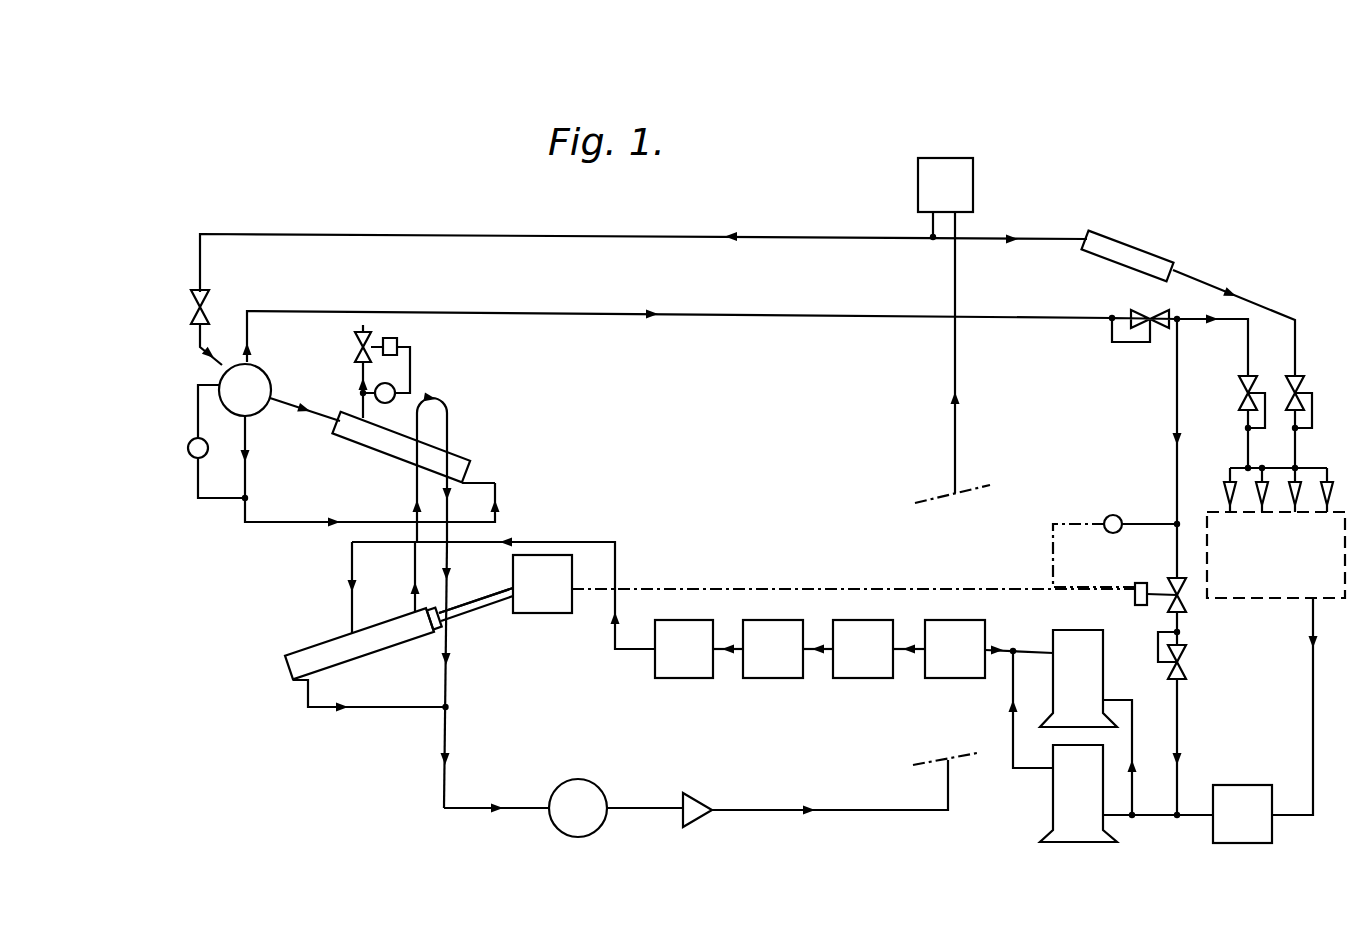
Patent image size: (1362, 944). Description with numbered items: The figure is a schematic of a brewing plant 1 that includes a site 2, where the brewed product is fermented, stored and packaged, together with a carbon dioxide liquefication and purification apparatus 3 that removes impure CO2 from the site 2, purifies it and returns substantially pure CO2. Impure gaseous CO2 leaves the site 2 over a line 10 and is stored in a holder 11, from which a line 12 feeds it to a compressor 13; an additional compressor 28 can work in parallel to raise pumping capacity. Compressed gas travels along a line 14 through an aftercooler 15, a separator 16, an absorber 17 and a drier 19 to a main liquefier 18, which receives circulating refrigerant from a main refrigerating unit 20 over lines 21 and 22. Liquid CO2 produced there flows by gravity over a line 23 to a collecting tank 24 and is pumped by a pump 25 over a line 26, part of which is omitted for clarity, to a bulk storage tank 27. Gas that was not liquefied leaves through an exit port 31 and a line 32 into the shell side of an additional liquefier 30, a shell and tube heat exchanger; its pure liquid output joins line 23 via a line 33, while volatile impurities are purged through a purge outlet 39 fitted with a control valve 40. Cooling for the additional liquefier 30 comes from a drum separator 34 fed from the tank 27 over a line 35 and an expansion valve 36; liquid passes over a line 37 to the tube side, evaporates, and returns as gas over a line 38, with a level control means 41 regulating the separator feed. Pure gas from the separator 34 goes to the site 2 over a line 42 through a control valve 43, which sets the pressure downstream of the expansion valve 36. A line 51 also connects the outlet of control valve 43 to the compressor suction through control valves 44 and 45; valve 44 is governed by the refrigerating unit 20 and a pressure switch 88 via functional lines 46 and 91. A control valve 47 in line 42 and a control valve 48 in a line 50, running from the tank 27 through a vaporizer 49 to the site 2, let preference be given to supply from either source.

The brewing plant 1 is at (768, 215).
The site 2 is at (1262, 598).
The carbon dioxide liquefication and purification apparatus 3 is at (422, 770).
The line 10 is at (1329, 704).
The holder 11 is at (1268, 843).
The line 12 is at (1157, 818).
The compressor 13 is at (1053, 797).
The line 14 is at (1013, 729).
The aftercooler 15 is at (950, 680).
The separator 16 is at (866, 680).
The absorber 17 is at (773, 680).
The main liquefier 18 is at (323, 645).
The drier 19 is at (680, 680).
The main refrigerating unit 20 is at (545, 613).
The line 21 is at (486, 601).
The line 22 is at (485, 605).
The line 23 is at (380, 708).
The collecting tank 24 is at (556, 826).
The pump 25 is at (702, 820).
The line 26 is at (875, 812).
The bulk storage tank 27 is at (975, 176).
The additional compressor 28 is at (1103, 651).
The additional liquefier 30 is at (472, 466).
The exit port 31 is at (414, 608).
The line 32 is at (450, 412).
The line 33 is at (447, 677).
The drum separator 34 is at (265, 372).
The line 35 is at (652, 236).
The expansion valve 36 is at (207, 298).
The line 37 is at (246, 487).
The line 38 is at (313, 417).
The purge outlet 39 is at (360, 385).
The control valve 40 is at (367, 326).
The level control means 41 is at (200, 458).
The line 42 is at (762, 316).
The control valve 43 is at (1132, 315).
The control valve 44 is at (1172, 588).
The control valve 45 is at (1186, 658).
The functional line 46 is at (812, 588).
The control valve 47 is at (1242, 385).
The control valve 48 is at (1305, 388).
The vaporizer 49 is at (1140, 247).
The line 50 is at (1298, 344).
The line 51 is at (1178, 478).
The pressure switch 88 is at (1108, 516).
The functional line 91 is at (1053, 540).